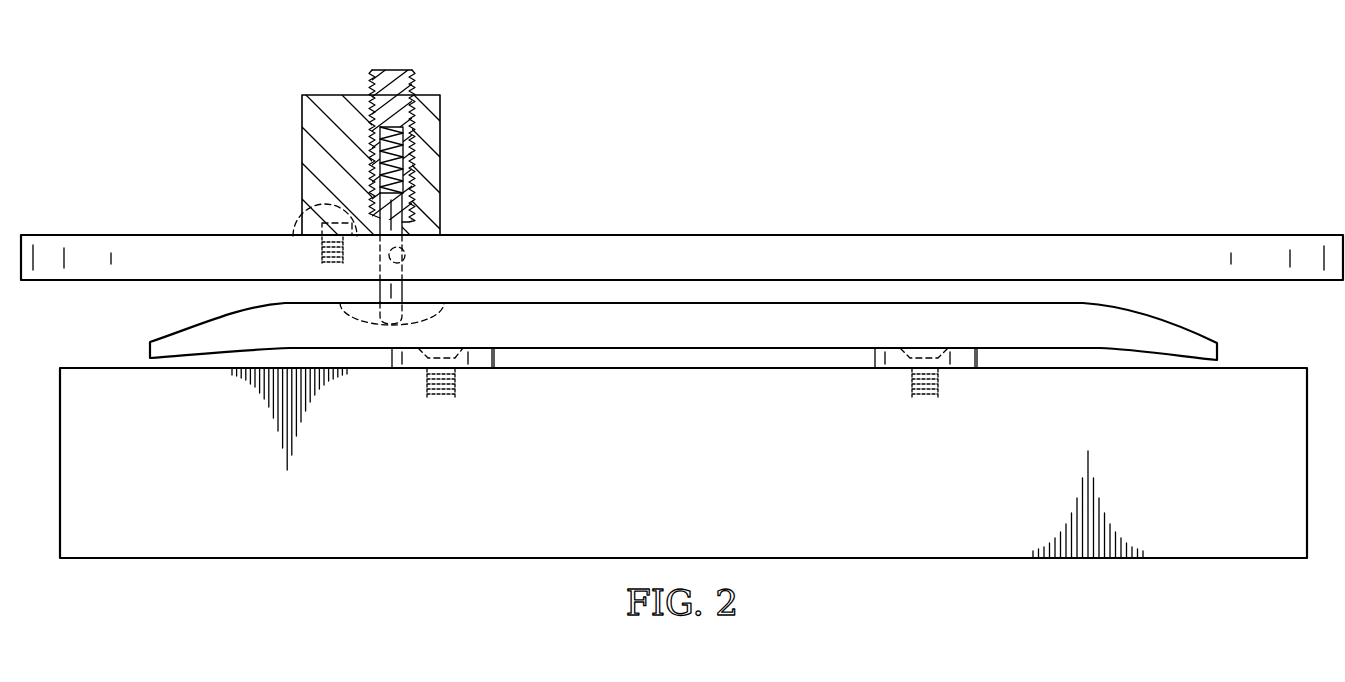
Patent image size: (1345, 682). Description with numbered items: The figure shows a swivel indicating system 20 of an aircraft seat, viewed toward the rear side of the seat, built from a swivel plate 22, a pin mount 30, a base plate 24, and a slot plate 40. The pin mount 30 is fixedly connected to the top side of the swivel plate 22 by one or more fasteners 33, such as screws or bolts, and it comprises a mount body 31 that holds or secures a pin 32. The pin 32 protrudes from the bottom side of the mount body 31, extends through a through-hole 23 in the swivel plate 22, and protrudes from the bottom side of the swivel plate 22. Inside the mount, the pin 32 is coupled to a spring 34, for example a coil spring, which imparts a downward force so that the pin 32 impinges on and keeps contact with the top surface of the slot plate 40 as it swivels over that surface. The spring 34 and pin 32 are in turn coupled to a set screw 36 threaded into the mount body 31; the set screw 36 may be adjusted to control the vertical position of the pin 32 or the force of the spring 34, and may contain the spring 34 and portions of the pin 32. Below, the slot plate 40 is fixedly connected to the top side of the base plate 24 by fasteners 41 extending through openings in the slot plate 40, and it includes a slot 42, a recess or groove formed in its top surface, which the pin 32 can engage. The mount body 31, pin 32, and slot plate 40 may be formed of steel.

The swivel indicating system 20 is at (1295, 57).
The swivel plate 22 is at (93, 235).
The through-hole 23 is at (408, 258).
The base plate 24 is at (205, 560).
The pin mount 30 is at (303, 47).
The mount body 31 is at (302, 125).
The pin 32 is at (407, 230).
The fasteners 33 is at (300, 207).
The spring 34 is at (384, 167).
The set screw 36 is at (387, 70).
The slot plate 40 is at (1235, 300).
The fasteners 41 is at (433, 398).
The slot 42 is at (346, 311).